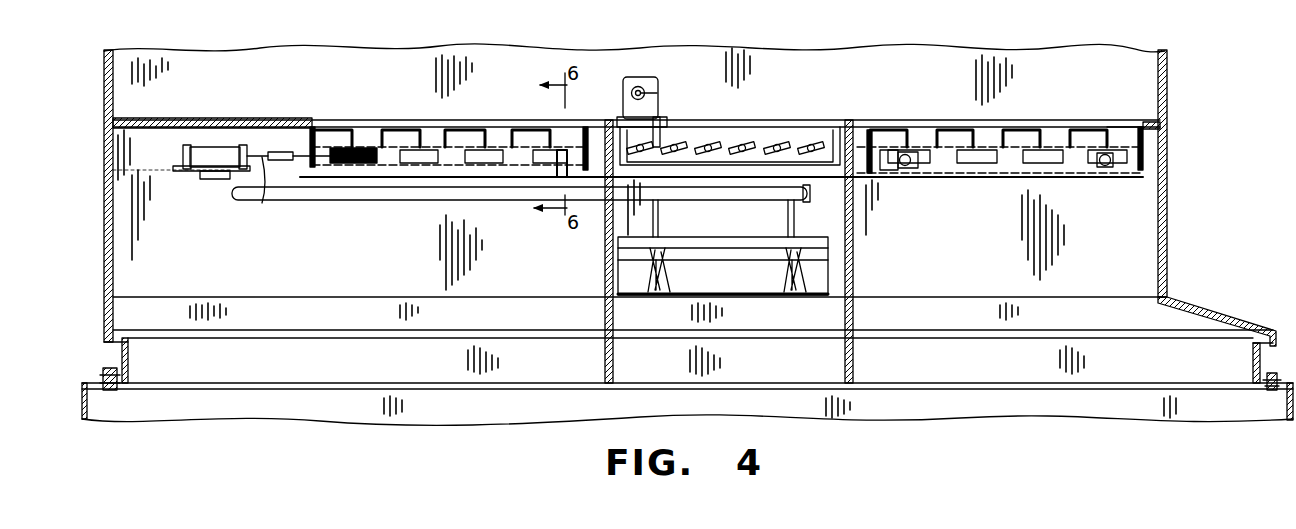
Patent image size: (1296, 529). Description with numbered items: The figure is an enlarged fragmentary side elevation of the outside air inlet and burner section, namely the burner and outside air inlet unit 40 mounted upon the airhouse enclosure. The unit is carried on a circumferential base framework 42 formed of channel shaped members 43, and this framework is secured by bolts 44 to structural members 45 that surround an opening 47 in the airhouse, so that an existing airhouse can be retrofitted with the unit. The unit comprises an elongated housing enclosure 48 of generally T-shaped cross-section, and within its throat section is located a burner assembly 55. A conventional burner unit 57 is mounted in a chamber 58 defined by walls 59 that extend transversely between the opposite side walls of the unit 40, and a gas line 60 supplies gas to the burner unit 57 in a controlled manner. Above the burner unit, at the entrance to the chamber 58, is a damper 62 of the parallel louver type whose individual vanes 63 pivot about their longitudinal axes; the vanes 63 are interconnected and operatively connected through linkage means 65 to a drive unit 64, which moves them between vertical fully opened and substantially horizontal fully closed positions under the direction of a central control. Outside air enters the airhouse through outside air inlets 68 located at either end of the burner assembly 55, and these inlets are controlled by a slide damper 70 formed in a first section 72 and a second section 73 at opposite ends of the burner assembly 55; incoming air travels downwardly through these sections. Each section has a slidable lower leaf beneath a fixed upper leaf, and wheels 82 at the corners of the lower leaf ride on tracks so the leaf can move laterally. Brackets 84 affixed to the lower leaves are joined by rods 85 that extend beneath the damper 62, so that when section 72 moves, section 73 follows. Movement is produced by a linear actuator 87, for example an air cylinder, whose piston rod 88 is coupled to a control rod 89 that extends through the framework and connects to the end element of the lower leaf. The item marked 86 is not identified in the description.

The burner and outside air inlet unit 40 is at (1213, 76).
The circumferential base framework 42 is at (1270, 322).
The channel shaped members 43 is at (1253, 366).
The bolts 44 is at (1268, 390).
The structural members 45 is at (1291, 420).
The opening 47 is at (1112, 403).
The housing enclosure 48 is at (1170, 235).
The burner assembly 55 is at (784, 116).
The burner unit 57 is at (832, 280).
The chamber 58 is at (630, 221).
The walls 59 is at (605, 312).
The gas line 60 is at (393, 200).
The damper 62 is at (828, 128).
The vanes 63 is at (757, 141).
The drive unit 64 is at (641, 77).
The linkage means 65 is at (660, 108).
The outside air inlets 68 is at (367, 136).
The damper 70 is at (474, 88).
The first damper section 72 is at (338, 113).
The second damper section 73 is at (1090, 112).
The wheels 82 is at (1104, 167).
The brackets 84 is at (909, 172).
The rods 85 is at (864, 178).
The nut 86 is at (907, 172).
The linear actuator 87 is at (182, 152).
The piston rod 88 is at (262, 203).
The control rod 89 is at (300, 156).